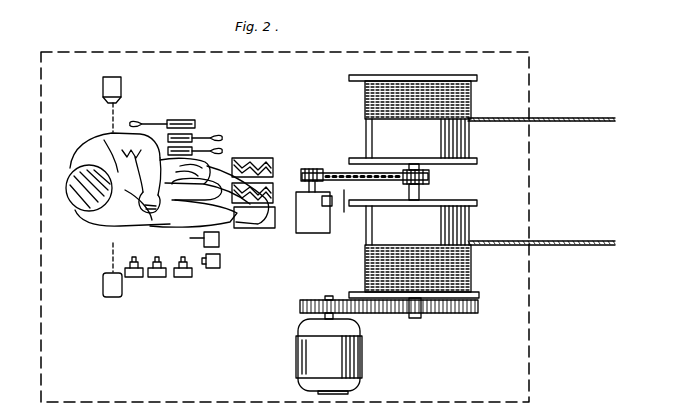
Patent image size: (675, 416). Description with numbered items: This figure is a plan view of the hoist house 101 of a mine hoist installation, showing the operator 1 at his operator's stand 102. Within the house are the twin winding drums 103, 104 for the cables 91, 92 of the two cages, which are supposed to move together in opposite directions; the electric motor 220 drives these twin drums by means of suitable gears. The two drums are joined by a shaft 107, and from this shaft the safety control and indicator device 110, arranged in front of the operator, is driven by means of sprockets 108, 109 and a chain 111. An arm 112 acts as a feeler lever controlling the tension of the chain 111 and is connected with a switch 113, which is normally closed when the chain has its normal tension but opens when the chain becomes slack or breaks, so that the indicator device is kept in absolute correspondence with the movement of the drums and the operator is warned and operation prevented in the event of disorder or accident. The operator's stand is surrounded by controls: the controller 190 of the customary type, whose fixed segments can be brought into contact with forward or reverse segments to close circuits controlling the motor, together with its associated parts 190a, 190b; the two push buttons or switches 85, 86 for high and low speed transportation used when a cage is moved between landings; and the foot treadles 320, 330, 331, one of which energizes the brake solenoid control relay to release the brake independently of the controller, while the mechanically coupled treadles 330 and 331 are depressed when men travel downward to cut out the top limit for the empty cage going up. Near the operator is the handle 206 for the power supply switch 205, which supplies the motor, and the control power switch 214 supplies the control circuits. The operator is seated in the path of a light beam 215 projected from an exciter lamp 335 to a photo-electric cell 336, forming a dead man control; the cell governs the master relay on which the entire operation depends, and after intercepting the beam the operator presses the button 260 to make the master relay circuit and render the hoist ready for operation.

The patient 1 is at (167, 180).
The push button switch for high speed transportation 85 is at (219, 243).
The push button switch for low speed transportation 86 is at (220, 261).
The cable 91 is at (524, 240).
The cable 92 is at (547, 122).
The hoist house 101 is at (524, 340).
The operator's stand 102 is at (218, 108).
The winding drum 103 is at (380, 137).
The winding drum 104 is at (458, 222).
The shaft 107 is at (416, 193).
The sprocket 108 is at (430, 178).
The sprocket 109 is at (312, 169).
The safety control and indicator device 110 is at (315, 243).
The chain 111 is at (351, 209).
The arm 112 is at (330, 173).
The switch 113 is at (327, 207).
The controller 190 is at (158, 131).
The instrument 190a is at (223, 150).
The instrument 190b is at (222, 136).
The power supply switch 205 is at (158, 279).
The handle 206 is at (160, 259).
The control power switch 214 is at (187, 278).
The light beam 215 is at (104, 260).
The electric motor 220 is at (352, 359).
The button 260 is at (133, 278).
The foot treadle 320 is at (268, 229).
The foot treadle 330 is at (273, 196).
The foot treadle 331 is at (274, 153).
The exciter lamp 335 is at (103, 88).
The photo-electric cell 336 is at (103, 288).